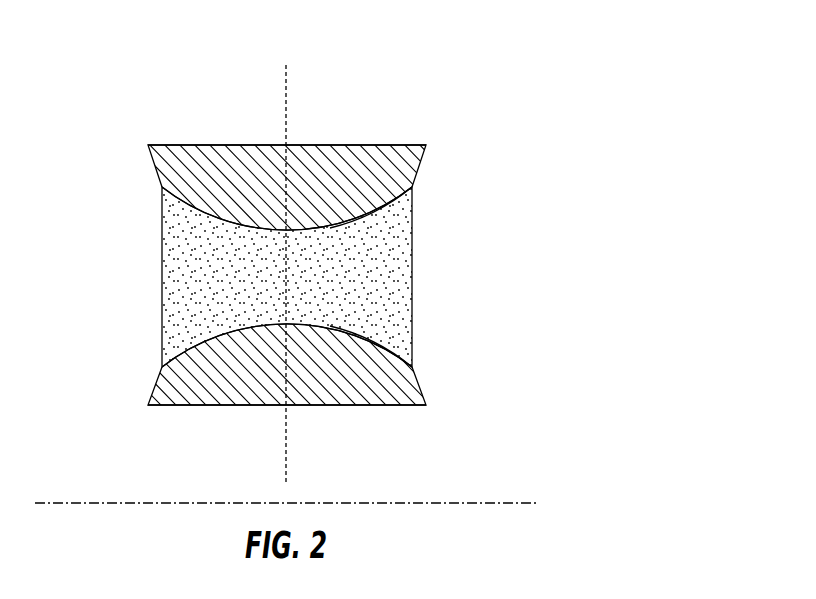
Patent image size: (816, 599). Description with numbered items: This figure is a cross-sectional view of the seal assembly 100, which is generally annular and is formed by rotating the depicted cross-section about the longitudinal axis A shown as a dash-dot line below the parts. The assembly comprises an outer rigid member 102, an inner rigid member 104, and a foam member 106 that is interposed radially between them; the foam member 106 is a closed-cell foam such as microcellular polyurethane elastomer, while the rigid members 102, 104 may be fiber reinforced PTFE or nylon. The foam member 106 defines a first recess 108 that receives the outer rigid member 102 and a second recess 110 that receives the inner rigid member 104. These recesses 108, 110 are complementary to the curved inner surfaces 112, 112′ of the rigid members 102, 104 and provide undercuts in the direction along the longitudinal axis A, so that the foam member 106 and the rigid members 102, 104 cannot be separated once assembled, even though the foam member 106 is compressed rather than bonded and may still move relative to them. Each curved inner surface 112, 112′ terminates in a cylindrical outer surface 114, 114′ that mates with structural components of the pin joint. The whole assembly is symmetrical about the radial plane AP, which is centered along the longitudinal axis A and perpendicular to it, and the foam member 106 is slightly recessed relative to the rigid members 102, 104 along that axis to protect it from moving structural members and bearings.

The seal assembly 100 is at (447, 72).
The outer rigid member 102 is at (400, 168).
The inner rigid member 104 is at (398, 390).
The foam member 106 is at (393, 258).
The first recess 108 is at (395, 200).
The second recess 110 is at (396, 352).
The inner surface 112 is at (200, 212).
The inner surface 112′ is at (188, 343).
The cylindrical outer surface 114 is at (348, 145).
The cylindrical outer surface 114′ is at (348, 405).
The radial plane AP is at (288, 80).
The longitudinal axis A is at (158, 503).